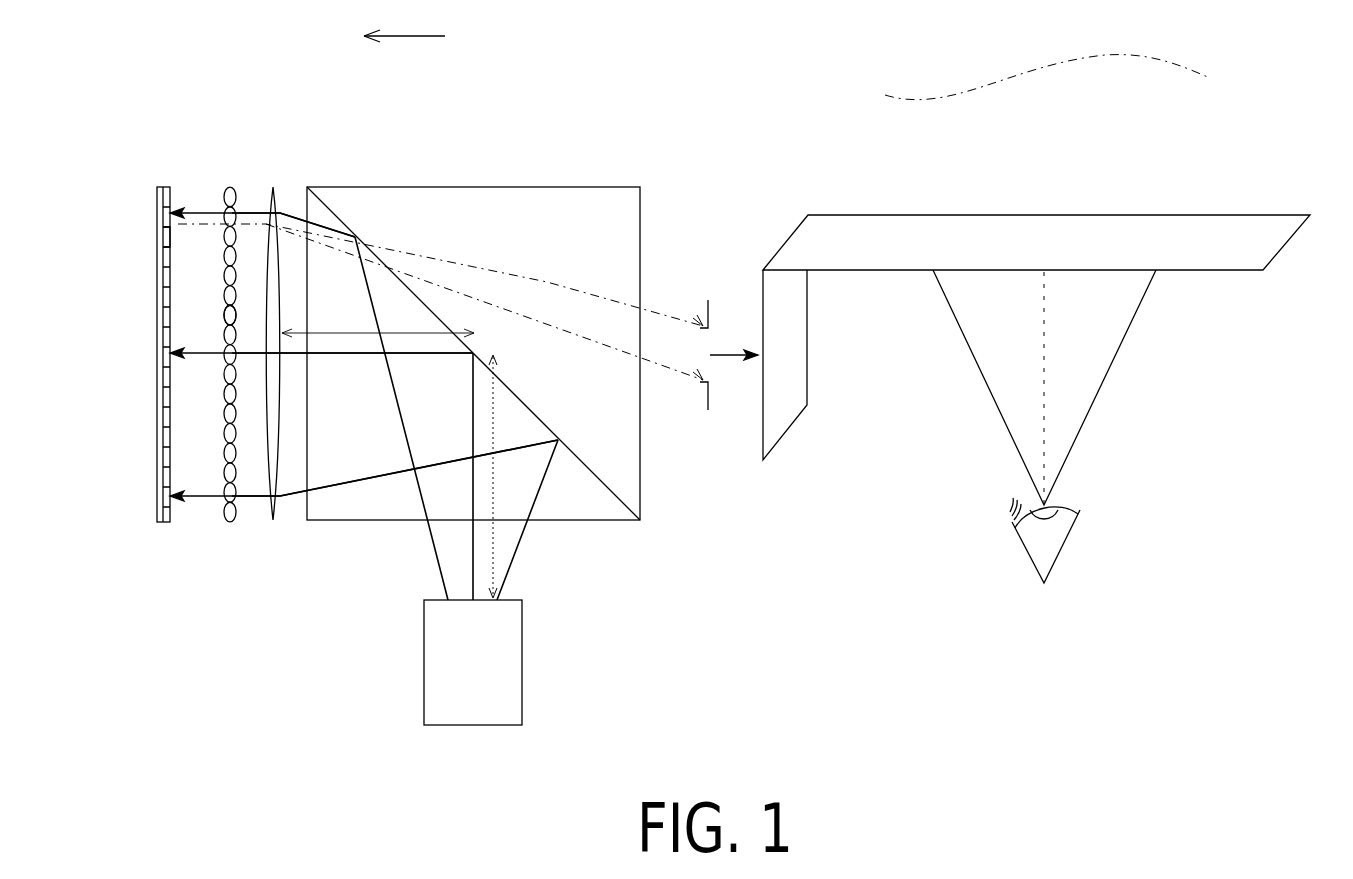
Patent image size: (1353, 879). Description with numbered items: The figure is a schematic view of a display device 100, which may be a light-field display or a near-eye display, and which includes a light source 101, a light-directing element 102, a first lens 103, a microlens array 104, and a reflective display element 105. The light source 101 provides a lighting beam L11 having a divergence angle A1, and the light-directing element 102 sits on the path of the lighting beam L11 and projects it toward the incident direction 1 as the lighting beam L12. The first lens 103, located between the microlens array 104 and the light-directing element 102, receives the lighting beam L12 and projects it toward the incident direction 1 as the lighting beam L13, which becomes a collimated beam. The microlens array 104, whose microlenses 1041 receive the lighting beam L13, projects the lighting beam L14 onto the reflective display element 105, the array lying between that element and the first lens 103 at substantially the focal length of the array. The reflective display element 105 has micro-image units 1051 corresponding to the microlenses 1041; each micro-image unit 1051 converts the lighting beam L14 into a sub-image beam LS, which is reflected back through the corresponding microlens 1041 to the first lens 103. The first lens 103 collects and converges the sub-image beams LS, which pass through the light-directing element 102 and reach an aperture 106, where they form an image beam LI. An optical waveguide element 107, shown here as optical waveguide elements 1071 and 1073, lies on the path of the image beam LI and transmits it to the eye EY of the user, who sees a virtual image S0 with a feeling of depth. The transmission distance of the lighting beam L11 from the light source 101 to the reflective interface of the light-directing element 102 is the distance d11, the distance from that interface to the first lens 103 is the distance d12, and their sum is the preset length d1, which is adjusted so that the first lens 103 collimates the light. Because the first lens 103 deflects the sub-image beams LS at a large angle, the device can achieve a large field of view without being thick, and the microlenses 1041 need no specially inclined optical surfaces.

The direction arrow 1 is at (404, 21).
The display device 100 is at (1340, 751).
The light source 101 is at (500, 693).
The light-directing element 102 is at (545, 187).
The first lens 103 is at (272, 188).
The microlens array 104 is at (233, 184).
The microlens 1041 is at (226, 320).
The reflective display element 105 is at (152, 192).
The micro-image unit 1051 is at (166, 240).
The aperture 106 is at (710, 412).
The optical waveguide element 107 is at (1036, 319).
The optical waveguide element 1071 is at (822, 372).
The optical waveguide element 1073 is at (865, 228).
The sub-image beam LS is at (200, 226).
The image beam LI is at (732, 352).
The virtual image S0 is at (885, 92).
The eye EY is at (1055, 550).
The length d1 is at (498, 355).
The distance d11 is at (492, 534).
The distance d12 is at (412, 333).
The divergence angle A1 is at (465, 547).
The lighting beam L11 is at (432, 585).
The lighting beam L12 is at (315, 500).
The lighting beam L13 is at (248, 500).
The lighting beam L14 is at (203, 500).